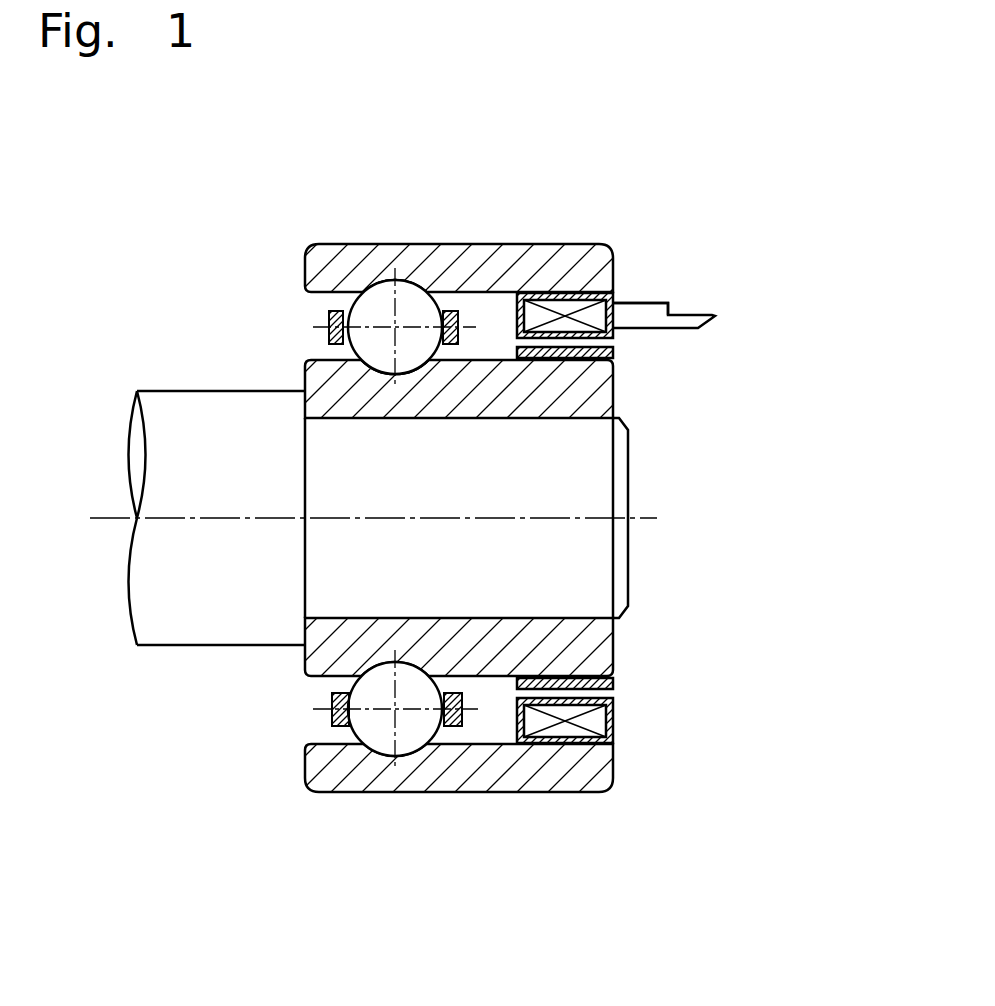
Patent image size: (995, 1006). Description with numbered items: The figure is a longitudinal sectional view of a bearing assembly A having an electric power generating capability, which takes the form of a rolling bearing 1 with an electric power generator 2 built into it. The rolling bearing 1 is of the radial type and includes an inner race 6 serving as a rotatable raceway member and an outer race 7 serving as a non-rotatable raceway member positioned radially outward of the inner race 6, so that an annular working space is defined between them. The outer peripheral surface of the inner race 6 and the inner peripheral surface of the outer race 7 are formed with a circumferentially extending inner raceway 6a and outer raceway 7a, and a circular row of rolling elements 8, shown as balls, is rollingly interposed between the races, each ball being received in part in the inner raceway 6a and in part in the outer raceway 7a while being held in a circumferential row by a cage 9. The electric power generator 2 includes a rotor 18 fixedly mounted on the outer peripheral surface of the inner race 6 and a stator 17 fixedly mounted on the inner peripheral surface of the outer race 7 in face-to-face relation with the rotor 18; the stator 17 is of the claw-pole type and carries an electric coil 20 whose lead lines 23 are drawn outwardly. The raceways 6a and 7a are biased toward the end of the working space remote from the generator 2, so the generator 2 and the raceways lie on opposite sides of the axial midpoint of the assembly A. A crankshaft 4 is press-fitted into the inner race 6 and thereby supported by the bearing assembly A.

The bearing assembly A is at (342, 205).
The rolling bearing 1 is at (515, 243).
The electric power generator 2 is at (812, 260).
The crankshaft 4 is at (582, 477).
The inner race 6 is at (318, 375).
The inner raceway 6a is at (378, 368).
The outer race 7 is at (318, 247).
The outer raceway 7a is at (408, 290).
The rolling element 8 is at (373, 298).
The cage 9 is at (325, 322).
The stator 17 is at (620, 300).
The rotor 18 is at (615, 350).
The electric coil 20 is at (578, 295).
The lead lines 23 is at (645, 323).